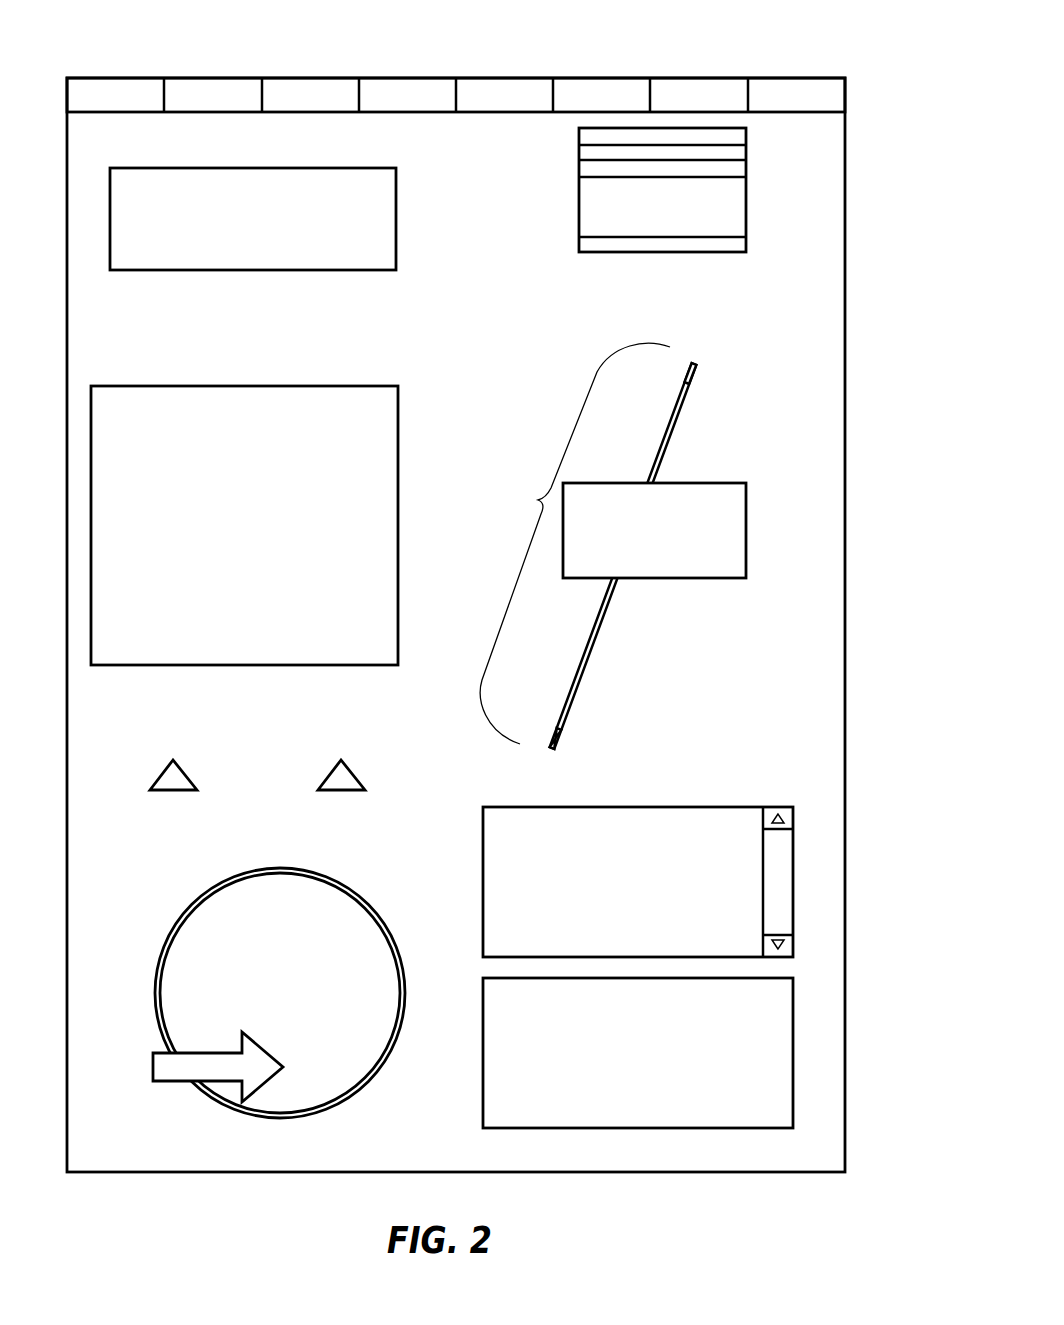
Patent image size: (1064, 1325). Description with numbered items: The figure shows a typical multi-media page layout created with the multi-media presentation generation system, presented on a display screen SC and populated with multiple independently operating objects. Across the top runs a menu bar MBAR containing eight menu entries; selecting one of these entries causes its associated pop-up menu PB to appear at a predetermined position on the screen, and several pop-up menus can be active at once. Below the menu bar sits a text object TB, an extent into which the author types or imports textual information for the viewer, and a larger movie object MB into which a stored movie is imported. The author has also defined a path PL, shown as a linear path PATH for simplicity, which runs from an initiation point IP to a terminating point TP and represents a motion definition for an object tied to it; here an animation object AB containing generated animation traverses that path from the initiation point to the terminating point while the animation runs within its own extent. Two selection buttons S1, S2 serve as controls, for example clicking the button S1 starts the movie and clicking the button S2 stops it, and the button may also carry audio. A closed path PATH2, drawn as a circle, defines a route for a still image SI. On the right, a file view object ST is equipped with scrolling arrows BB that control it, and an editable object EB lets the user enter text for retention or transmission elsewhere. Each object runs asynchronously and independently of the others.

The screen SC is at (847, 262).
The menu bar MBAR is at (618, 70).
The text object TB is at (396, 199).
The pop-up menu PB is at (636, 253).
The movie object MB is at (327, 385).
The initiation point IP is at (699, 353).
The terminating point TP is at (551, 755).
The path PATH is at (600, 638).
The path PL is at (537, 500).
The animation object AB is at (711, 483).
The selection button S1 is at (165, 768).
The button S2 is at (333, 768).
The closed path PATH2 is at (386, 940).
The sprite image (arrow) SI is at (193, 1052).
The file view object ST is at (703, 807).
The scrolling arrows BB is at (795, 815).
The editable object EB is at (483, 1042).